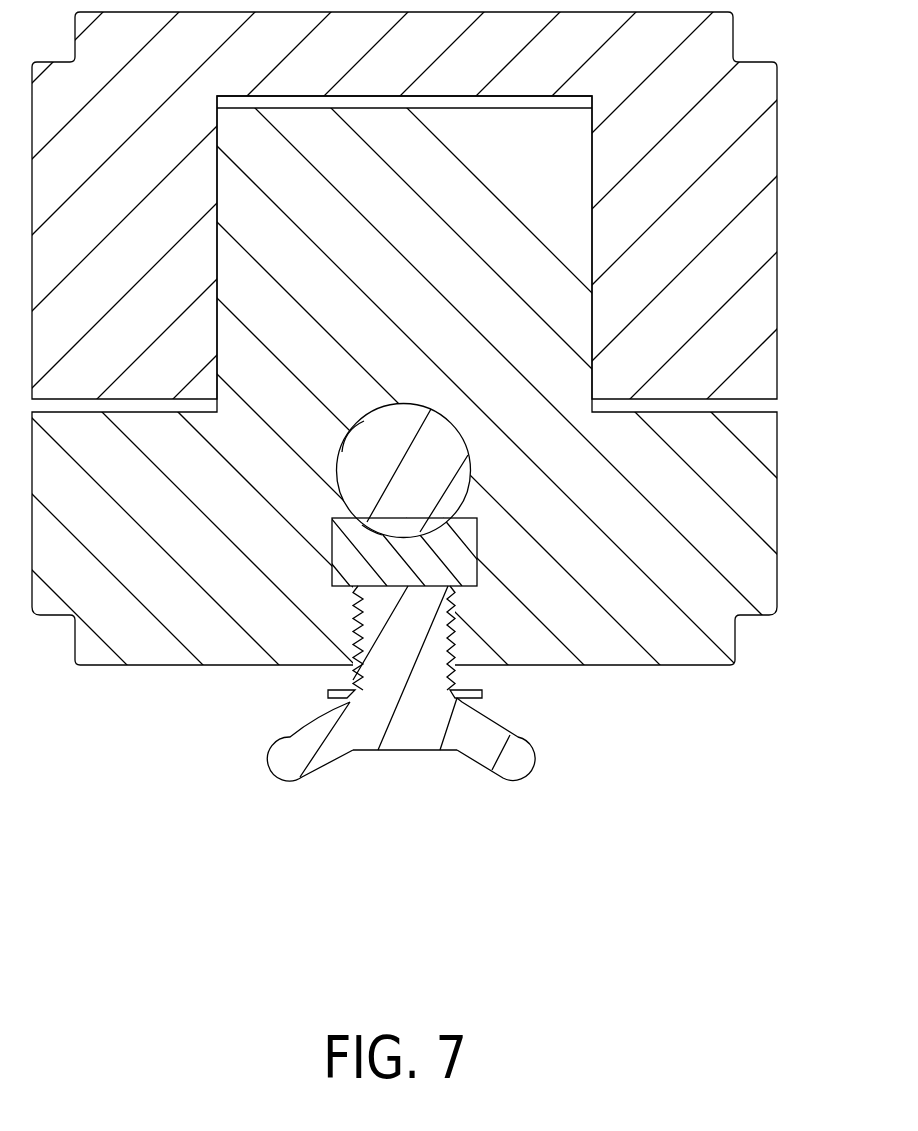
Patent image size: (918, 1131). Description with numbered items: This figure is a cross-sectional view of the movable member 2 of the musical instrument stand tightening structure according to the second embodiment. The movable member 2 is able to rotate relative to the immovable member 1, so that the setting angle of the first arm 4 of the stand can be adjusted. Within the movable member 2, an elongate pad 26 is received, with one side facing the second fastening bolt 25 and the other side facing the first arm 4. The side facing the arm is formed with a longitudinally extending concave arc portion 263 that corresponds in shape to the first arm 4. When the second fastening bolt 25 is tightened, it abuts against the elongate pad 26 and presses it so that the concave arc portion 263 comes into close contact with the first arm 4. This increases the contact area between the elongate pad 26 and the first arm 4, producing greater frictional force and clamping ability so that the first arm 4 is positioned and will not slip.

The immovable member 1 is at (763, 225).
The movable member 2 is at (758, 510).
The first arm 4 is at (426, 472).
The second fastening bolt 25 is at (410, 733).
The elongate pad 26 is at (460, 560).
The concave arc portion 263 is at (380, 533).